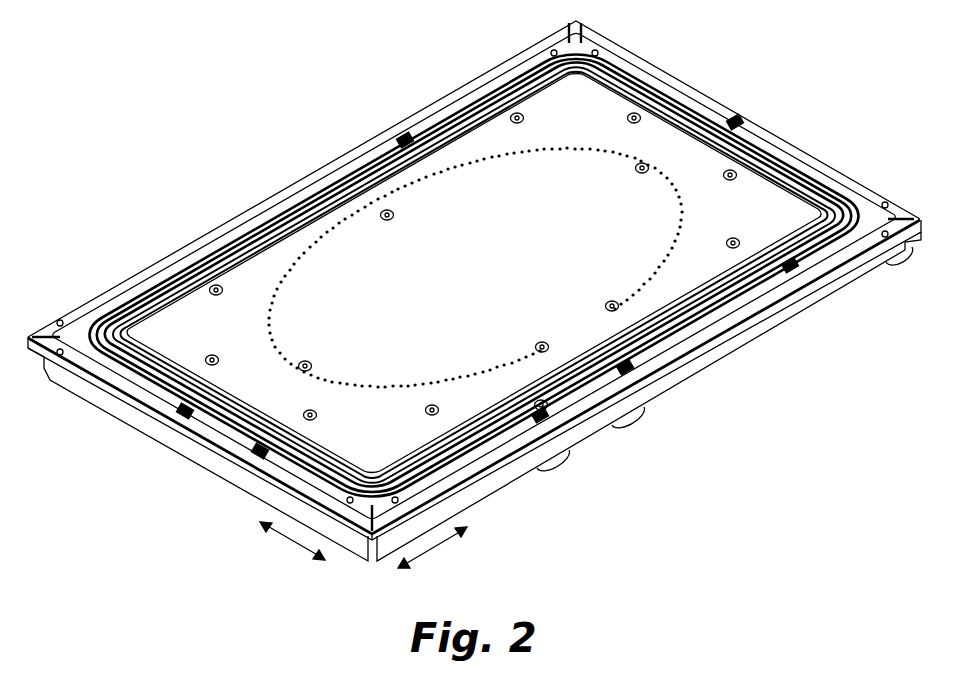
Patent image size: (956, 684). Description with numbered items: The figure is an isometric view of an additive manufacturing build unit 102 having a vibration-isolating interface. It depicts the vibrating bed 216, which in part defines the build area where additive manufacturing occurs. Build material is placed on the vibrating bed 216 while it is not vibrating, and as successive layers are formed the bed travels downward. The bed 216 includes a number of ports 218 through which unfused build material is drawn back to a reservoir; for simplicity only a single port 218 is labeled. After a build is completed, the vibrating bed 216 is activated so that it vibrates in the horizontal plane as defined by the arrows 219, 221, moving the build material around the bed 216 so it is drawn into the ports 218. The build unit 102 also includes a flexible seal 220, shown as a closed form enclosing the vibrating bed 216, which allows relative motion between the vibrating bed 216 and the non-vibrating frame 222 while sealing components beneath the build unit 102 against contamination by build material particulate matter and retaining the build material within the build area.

The additive manufacturing build unit 102 is at (474, 305).
The vibrating bed 216 is at (188, 302).
The port 218 is at (387, 208).
The arrow 219 is at (282, 537).
The flexible seal 220 is at (792, 268).
The arrow 221 is at (433, 546).
The non-vibrating frame 222 is at (726, 118).